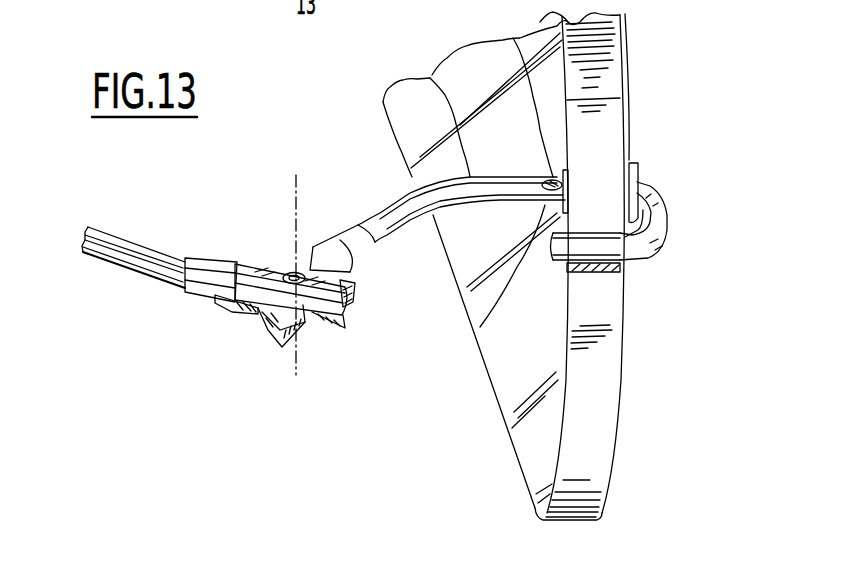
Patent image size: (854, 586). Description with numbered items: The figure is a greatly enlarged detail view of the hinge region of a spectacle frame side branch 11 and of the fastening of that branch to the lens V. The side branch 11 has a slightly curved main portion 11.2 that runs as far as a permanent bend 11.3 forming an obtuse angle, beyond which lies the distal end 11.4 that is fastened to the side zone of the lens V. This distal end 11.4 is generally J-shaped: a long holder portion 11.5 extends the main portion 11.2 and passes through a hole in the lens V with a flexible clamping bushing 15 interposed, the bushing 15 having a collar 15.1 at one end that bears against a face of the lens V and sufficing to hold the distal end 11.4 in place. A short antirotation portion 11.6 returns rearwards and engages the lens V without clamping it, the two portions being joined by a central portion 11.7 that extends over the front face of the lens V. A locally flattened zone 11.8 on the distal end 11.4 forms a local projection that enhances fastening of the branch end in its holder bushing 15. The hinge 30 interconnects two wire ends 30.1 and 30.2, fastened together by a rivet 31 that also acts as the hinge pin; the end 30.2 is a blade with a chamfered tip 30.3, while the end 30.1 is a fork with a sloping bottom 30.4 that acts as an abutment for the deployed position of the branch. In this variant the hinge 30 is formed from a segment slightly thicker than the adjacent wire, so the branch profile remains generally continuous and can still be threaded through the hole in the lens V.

The side branch 11 is at (85, 253).
The main portion 11.2 is at (112, 243).
The permanent bend 11.3 is at (403, 207).
The distal end 11.4 is at (673, 209).
The long holder portion 11.5 is at (432, 80).
The short antirotation portion 11.6 is at (600, 250).
The central portion 11.7 is at (653, 222).
The locally flattened zone 11.8 is at (515, 37).
The flexible clamping bushing 15 is at (480, 327).
The collar 15.1 is at (639, 172).
The hinge 30 is at (318, 232).
The wire end 30.1 is at (358, 247).
The wire end 30.2 is at (253, 280).
The chamfered tip 30.3 is at (273, 340).
The sloping bottom 30.4 is at (227, 300).
The rivet 31 is at (292, 273).
The lens V is at (606, 79).